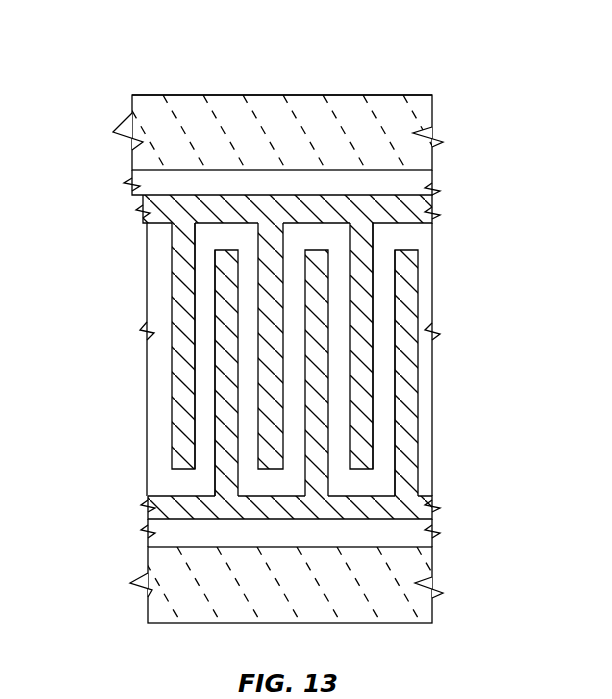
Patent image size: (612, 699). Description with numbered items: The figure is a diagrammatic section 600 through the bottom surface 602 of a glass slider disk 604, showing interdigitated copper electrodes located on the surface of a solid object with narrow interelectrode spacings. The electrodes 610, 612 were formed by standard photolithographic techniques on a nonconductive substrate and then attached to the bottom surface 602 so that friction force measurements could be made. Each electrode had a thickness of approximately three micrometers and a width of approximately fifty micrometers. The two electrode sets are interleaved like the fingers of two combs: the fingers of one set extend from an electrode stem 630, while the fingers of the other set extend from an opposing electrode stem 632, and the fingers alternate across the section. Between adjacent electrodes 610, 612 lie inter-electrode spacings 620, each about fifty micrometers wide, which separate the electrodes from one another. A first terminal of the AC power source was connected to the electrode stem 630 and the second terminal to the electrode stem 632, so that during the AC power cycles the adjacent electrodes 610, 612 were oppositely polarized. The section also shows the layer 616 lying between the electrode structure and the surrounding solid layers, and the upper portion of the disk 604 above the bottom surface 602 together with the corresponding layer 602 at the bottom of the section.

The section 600 is at (153, 39).
The bottom surface 602 is at (271, 112).
The glass slider disk 604 is at (393, 95).
The interdigitated copper electrode 610 is at (408, 370).
The interdigitated copper electrode 612 is at (372, 232).
The dielectric layer 616 is at (142, 174).
The inter-electrode spacing 620 is at (383, 340).
The electrode stem 630 is at (403, 503).
The electrode stem 632 is at (407, 202).